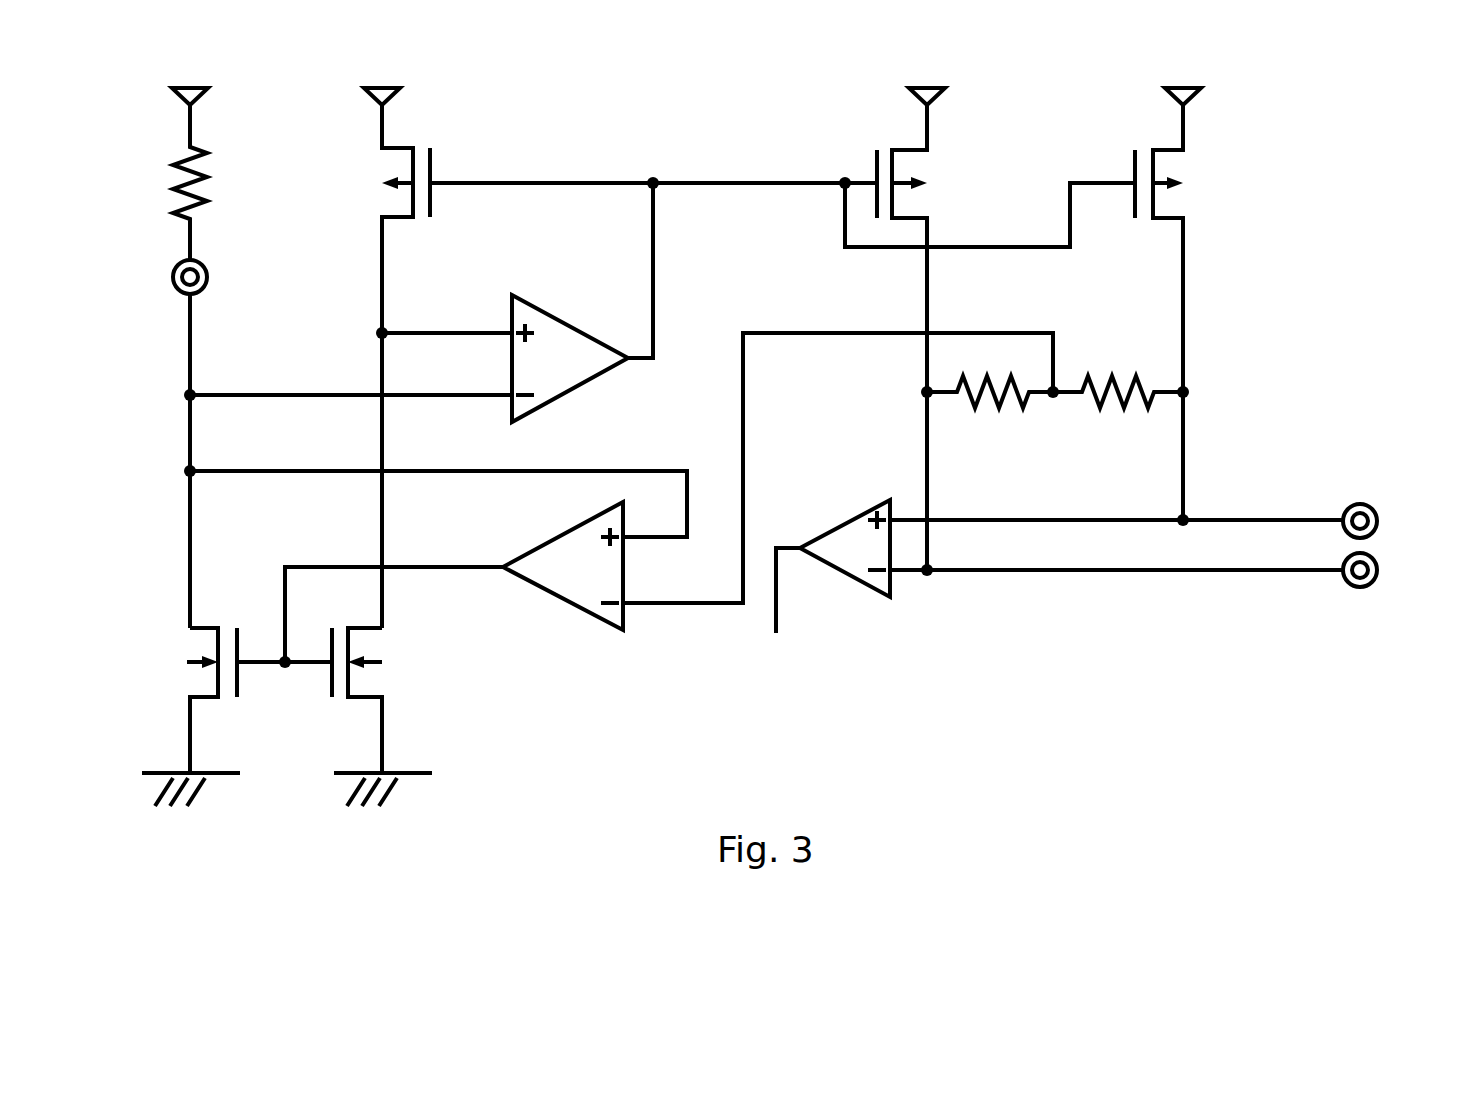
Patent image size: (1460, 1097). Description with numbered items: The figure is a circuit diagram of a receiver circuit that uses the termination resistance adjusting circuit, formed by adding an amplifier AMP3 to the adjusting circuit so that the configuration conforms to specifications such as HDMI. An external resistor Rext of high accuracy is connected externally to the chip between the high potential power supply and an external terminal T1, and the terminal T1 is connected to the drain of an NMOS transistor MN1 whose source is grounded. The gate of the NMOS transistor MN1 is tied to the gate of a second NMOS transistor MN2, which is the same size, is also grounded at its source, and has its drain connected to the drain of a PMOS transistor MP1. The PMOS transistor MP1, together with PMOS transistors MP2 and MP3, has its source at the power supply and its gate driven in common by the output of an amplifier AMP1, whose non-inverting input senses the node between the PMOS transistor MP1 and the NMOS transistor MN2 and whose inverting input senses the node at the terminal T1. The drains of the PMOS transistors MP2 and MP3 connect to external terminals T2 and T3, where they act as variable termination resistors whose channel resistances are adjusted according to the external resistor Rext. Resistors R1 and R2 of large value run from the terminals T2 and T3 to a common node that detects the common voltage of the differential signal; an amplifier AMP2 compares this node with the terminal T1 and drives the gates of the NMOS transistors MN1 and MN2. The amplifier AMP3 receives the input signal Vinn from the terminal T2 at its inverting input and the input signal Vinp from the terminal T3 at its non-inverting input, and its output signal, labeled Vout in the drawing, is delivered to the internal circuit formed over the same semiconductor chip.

The external resistor Rext is at (177, 187).
The external terminal T1 is at (166, 444).
The external terminal T2 is at (1134, 590).
The external terminal T3 is at (1133, 504).
The PMOS transistor MP1 is at (590, 358).
The PMOS transistor MP2 is at (987, 329).
The PMOS transistor MP3 is at (1193, 304).
The NMOS transistor MN1 is at (222, 717).
The NMOS transistor MN2 is at (393, 717).
The amplifier AMP1 is at (525, 297).
The amplifier AMP2 is at (607, 629).
The amplifier AMP3 is at (890, 597).
The resistor R1 is at (841, 468).
The resistor R2 is at (1121, 410).
The input signal Vinp is at (1315, 522).
The input signal Vinn is at (1315, 572).
The output voltage Vout is at (773, 609).